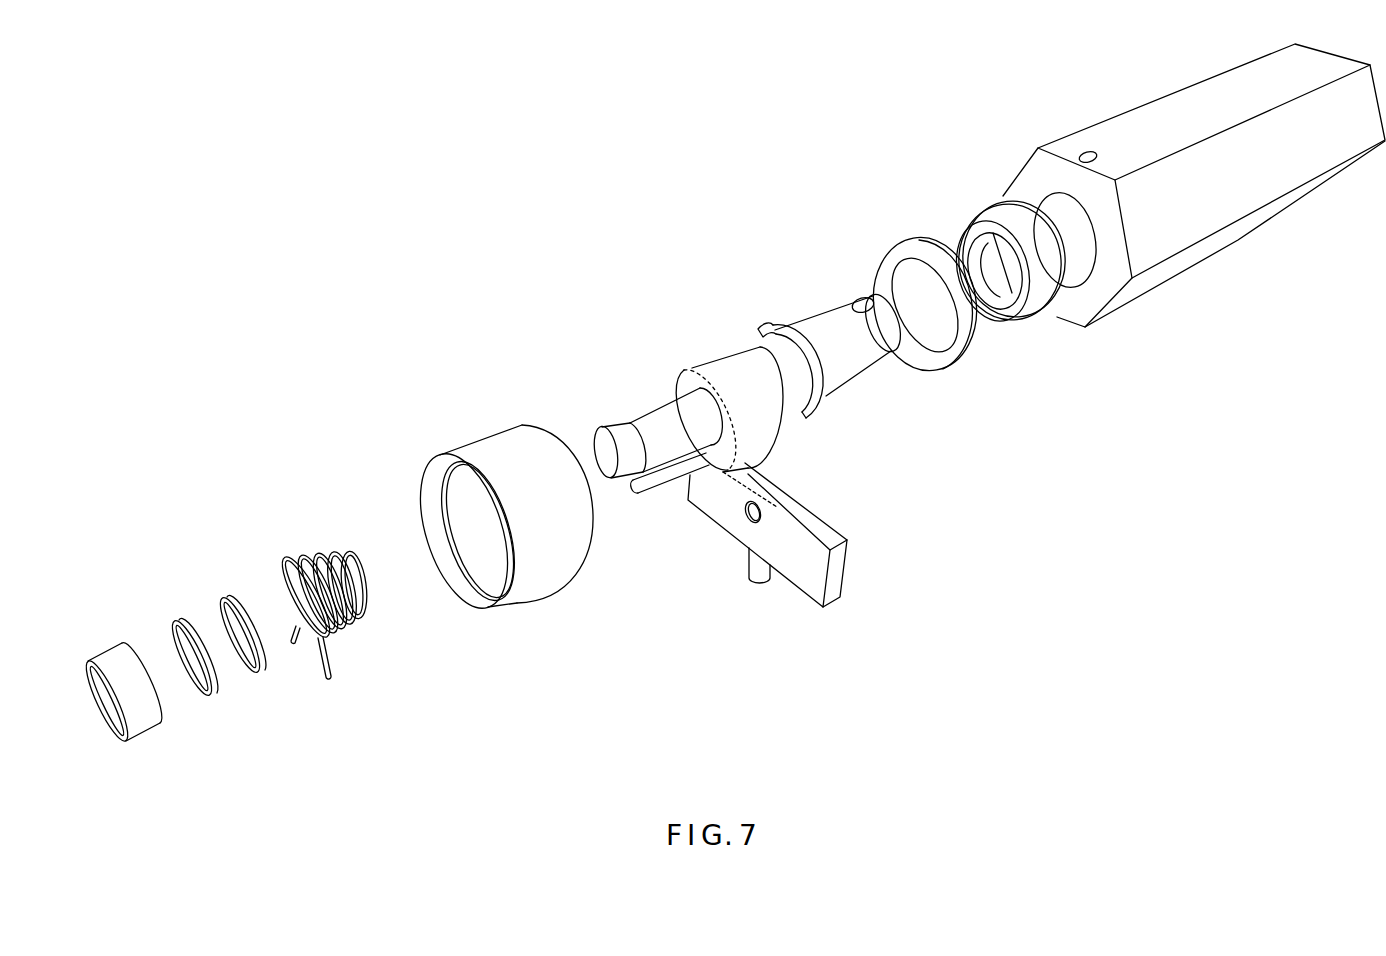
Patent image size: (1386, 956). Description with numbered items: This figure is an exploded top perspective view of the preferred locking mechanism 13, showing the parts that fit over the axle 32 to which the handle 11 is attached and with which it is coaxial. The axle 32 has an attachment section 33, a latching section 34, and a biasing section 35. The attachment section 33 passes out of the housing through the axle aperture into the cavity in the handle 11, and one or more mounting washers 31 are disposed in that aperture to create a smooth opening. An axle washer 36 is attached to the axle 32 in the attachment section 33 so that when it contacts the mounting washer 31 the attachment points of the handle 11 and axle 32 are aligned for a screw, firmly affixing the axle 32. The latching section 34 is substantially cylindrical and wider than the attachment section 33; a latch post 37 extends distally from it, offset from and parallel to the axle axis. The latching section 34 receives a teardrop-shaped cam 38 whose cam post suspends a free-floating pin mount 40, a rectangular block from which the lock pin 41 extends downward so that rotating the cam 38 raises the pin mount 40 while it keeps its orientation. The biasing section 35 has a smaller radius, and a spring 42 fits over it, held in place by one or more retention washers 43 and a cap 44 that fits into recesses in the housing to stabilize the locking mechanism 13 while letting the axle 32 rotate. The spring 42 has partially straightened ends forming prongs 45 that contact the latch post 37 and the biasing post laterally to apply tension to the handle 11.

The handle 11 is at (1112, 118).
The locking mechanism 13 is at (278, 125).
The mounting washer 31 is at (957, 363).
The axle 32 is at (855, 382).
The attachment section 33 is at (862, 277).
The latching section 34 is at (745, 341).
The biasing section 35 is at (587, 432).
The axle washer 36 is at (821, 413).
The latch post 37 is at (661, 487).
The cam 38 is at (470, 446).
The pin mount 40 is at (850, 565).
The lock pin 41 is at (757, 584).
The spring 42 is at (322, 547).
The retention washer 43 is at (177, 618).
The cap 44 is at (98, 653).
The prongs 45 is at (288, 646).